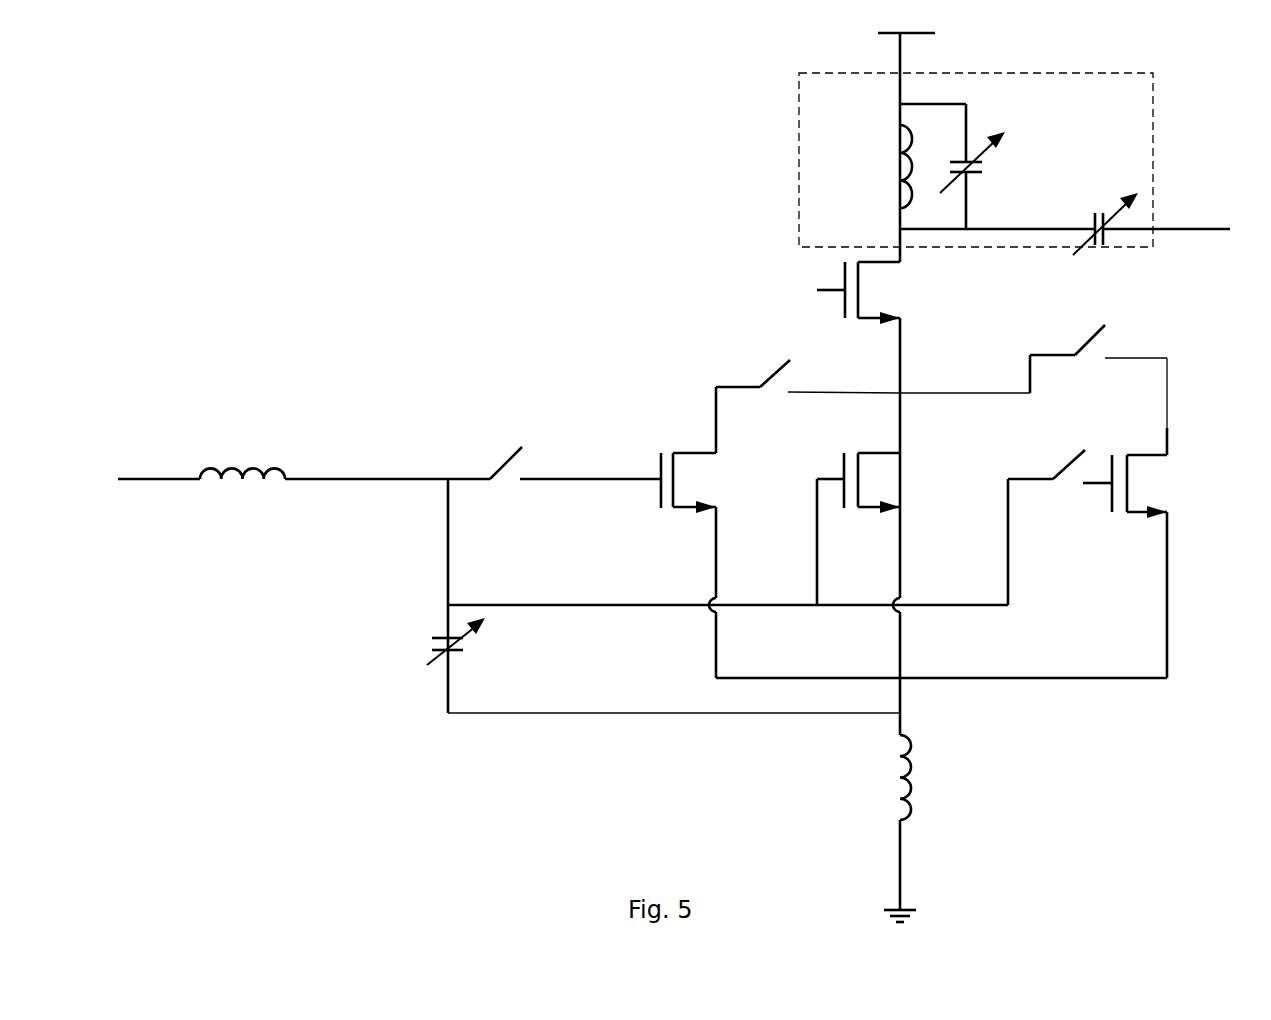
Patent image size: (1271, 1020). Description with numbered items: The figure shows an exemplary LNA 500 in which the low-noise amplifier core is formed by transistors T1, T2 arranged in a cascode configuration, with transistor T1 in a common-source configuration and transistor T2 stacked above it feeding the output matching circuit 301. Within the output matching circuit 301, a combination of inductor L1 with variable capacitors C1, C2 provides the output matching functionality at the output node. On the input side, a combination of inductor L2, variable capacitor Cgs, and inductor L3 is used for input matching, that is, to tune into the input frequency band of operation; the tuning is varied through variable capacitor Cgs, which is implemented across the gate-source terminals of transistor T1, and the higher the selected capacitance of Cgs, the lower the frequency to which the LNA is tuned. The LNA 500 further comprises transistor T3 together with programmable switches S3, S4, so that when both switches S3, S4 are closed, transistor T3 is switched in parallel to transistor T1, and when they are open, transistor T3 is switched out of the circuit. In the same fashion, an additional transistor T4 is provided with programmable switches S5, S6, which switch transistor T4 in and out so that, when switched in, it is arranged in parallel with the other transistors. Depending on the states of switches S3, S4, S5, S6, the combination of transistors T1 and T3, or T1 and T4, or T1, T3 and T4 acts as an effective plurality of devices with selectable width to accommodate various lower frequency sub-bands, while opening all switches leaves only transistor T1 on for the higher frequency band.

The LNA 500 is at (150, 756).
The output matching circuit 301 is at (1100, 73).
The transistor T1 is at (876, 483).
The transistor T2 is at (879, 293).
The transistor T3 is at (704, 483).
The transistor T4 is at (1138, 486).
The programmable switch S3 is at (497, 450).
The programmable switch S4 is at (779, 360).
The programmable switch S5 is at (1055, 461).
The programmable switch S6 is at (1075, 335).
The inductor L1 is at (889, 166).
The inductor L2 is at (934, 777).
The inductor L3 is at (242, 462).
The variable capacitor C1 is at (984, 162).
The variable capacitor C2 is at (1105, 214).
The variable capacitor Cgs is at (472, 641).